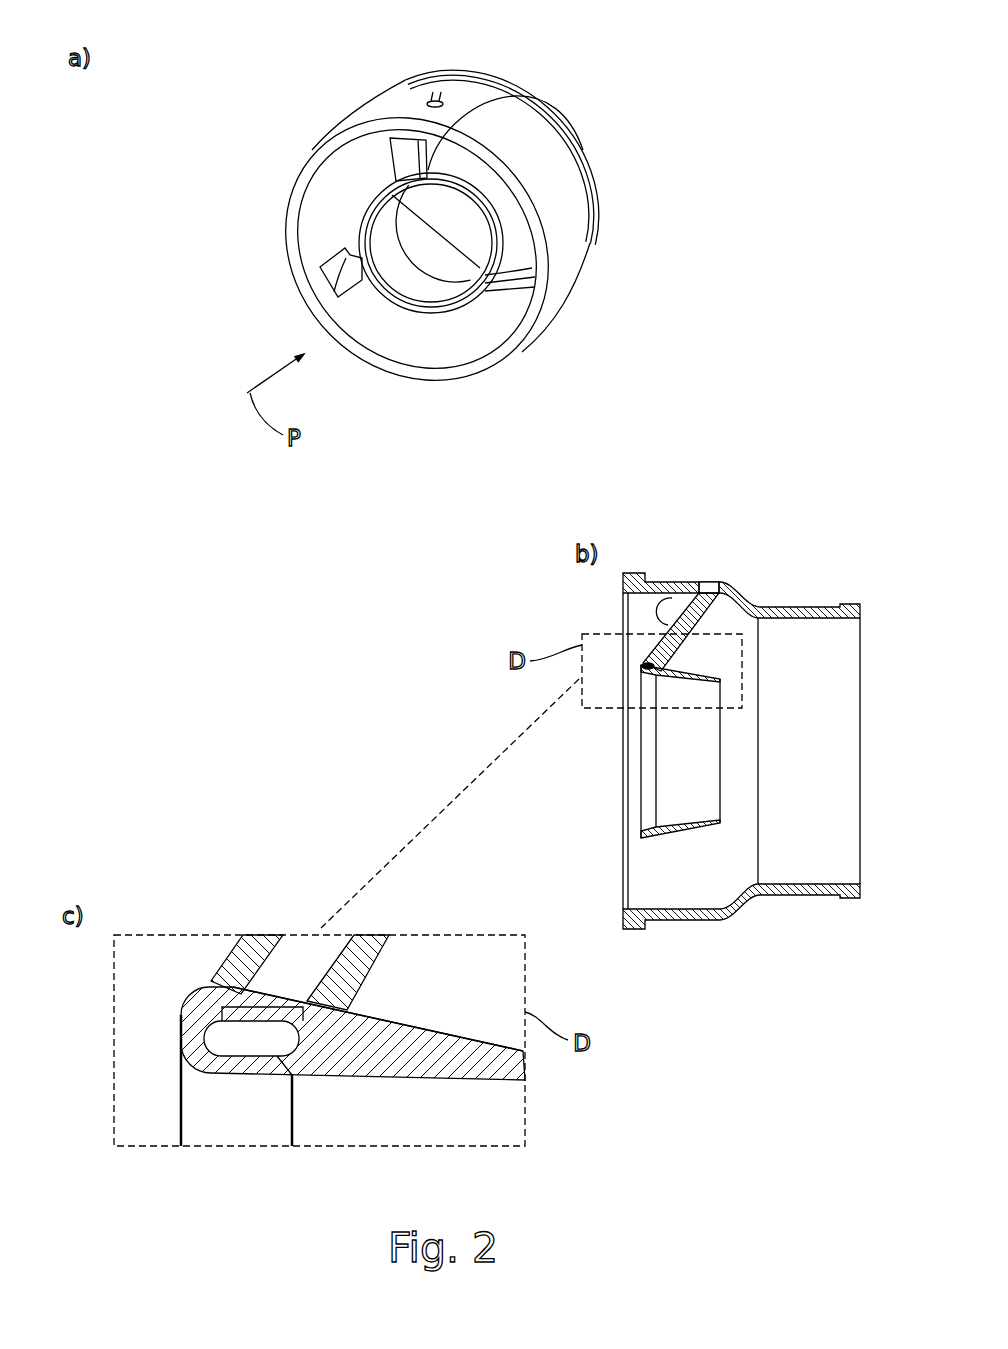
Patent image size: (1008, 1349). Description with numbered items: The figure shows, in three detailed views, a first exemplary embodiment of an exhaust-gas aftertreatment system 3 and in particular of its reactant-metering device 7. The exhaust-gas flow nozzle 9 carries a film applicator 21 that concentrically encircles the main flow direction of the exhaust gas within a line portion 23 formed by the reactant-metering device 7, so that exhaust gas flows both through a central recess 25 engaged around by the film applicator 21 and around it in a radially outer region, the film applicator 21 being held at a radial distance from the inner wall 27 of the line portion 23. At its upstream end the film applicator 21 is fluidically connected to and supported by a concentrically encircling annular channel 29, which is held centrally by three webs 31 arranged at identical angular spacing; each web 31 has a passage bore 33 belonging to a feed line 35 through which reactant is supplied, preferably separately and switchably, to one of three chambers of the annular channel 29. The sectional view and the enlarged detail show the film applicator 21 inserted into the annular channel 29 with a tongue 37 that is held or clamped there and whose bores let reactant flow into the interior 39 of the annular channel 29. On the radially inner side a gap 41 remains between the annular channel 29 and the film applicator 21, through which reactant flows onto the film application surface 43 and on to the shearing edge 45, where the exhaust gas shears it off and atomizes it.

The exhaust-gas aftertreatment system 3 is at (607, 54).
The reactant-metering device 7 is at (578, 127).
The exhaust-gas flow nozzle 9 is at (507, 244).
The film applicator 21 is at (485, 208).
The line portion 23 is at (594, 153).
The central recess 25 is at (436, 234).
The inner wall 27 is at (443, 345).
The annular channel 29 is at (358, 230).
The webs 31 is at (421, 141).
The passage bore 33 is at (428, 100).
The feed lines 35 is at (441, 95).
The tongue 37 is at (261, 1018).
The interior 39 is at (233, 1043).
The gap 41 is at (296, 1126).
The film application surface 43 is at (444, 1124).
The shearing edge 45 is at (722, 768).